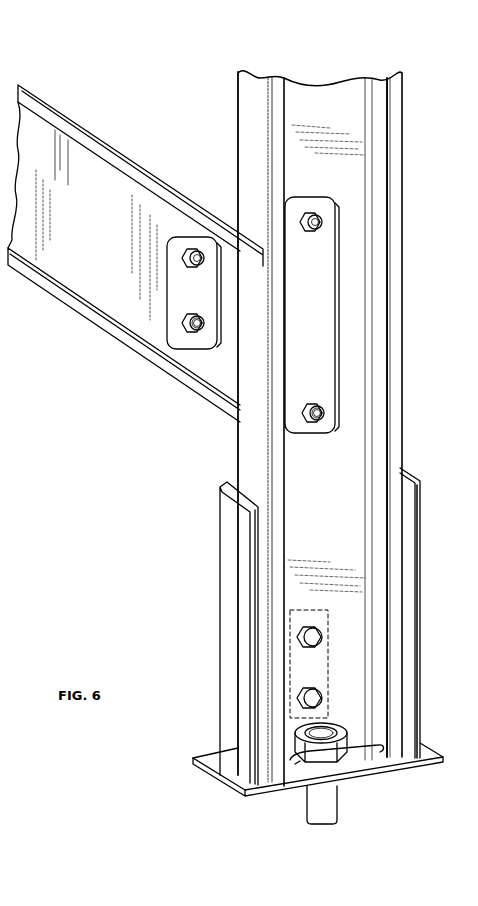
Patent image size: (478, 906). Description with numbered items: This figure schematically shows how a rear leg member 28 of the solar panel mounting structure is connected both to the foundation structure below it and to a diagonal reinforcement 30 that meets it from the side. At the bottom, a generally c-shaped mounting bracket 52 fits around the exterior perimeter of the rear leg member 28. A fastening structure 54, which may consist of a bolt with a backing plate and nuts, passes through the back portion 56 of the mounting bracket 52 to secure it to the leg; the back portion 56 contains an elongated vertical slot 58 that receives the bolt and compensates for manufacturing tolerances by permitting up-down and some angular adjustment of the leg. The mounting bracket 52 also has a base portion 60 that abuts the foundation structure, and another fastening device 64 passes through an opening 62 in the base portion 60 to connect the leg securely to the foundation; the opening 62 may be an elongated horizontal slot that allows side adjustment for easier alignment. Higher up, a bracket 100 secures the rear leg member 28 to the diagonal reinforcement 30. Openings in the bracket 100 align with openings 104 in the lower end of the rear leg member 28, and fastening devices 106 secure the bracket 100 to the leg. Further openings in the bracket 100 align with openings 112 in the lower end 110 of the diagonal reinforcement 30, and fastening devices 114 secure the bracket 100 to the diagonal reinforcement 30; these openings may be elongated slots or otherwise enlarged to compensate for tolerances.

The rear leg member 28 is at (395, 462).
The diagonal reinforcement 30 is at (38, 132).
The mounting bracket 52 is at (283, 615).
The fastening structure 54 is at (318, 637).
The back portion 56 is at (228, 487).
The elongated vertical slot 58 is at (328, 660).
The base portion 60 is at (385, 765).
The opening 62 is at (297, 768).
The fastening device 64 is at (340, 743).
The bracket 100 is at (323, 277).
The openings 104 is at (335, 422).
The fastening devices 106 is at (325, 223).
The lower end 110 is at (193, 380).
The openings 112 is at (200, 327).
The fastening devices 114 is at (195, 250).